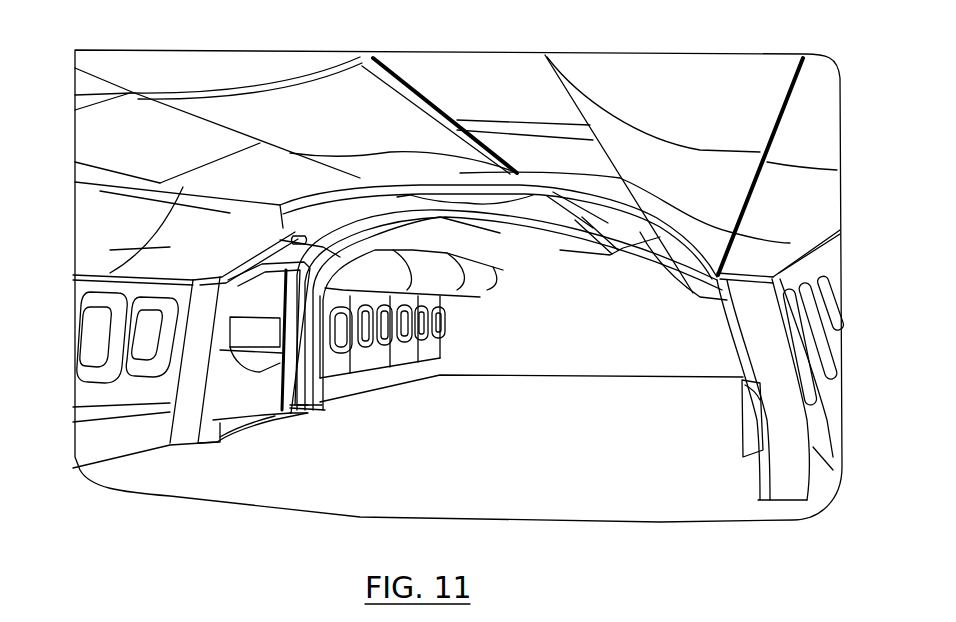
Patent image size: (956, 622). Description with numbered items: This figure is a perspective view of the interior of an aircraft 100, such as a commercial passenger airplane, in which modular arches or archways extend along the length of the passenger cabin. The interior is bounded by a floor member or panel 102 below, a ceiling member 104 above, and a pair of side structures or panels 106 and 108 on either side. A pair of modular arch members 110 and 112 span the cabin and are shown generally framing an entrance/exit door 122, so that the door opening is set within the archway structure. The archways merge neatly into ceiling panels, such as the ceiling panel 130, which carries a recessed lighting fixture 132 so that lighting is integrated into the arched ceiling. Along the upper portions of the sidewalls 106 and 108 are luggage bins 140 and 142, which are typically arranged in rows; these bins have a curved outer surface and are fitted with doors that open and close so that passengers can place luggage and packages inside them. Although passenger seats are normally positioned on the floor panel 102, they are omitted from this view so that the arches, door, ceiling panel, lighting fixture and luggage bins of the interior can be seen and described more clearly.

The interior of an aircraft 100 is at (167, 520).
The floor member or panel 102 is at (555, 455).
The ceiling member 104 is at (463, 75).
The side structure or panel 106 is at (90, 400).
The side structure or panel 108 is at (820, 250).
The modular arch member 110 is at (197, 435).
The modular arch member 112 is at (310, 407).
The entrance/exit door 122 is at (257, 400).
The ceiling panel 130 is at (437, 205).
The recessed lighting fixture 132 is at (497, 199).
The luggage bin 140 is at (110, 250).
The luggage bin 142 is at (688, 197).